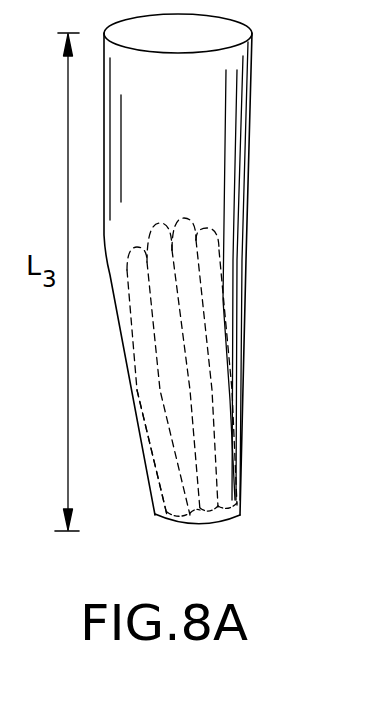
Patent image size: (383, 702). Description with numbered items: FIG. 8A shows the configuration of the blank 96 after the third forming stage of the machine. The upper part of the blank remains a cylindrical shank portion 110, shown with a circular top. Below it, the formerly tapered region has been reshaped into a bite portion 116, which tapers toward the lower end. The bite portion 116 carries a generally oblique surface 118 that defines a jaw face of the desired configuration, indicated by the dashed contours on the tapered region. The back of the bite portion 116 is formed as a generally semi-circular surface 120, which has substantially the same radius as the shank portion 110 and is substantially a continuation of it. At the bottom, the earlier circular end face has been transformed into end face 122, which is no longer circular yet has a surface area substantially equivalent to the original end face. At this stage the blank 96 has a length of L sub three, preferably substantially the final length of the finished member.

The blank 96 is at (278, 247).
The shank portion 110 is at (230, 122).
The bite portion 116 is at (218, 375).
The oblique surface 118 is at (182, 450).
The semi-circular surface 120 is at (193, 520).
The end face 122 is at (218, 522).